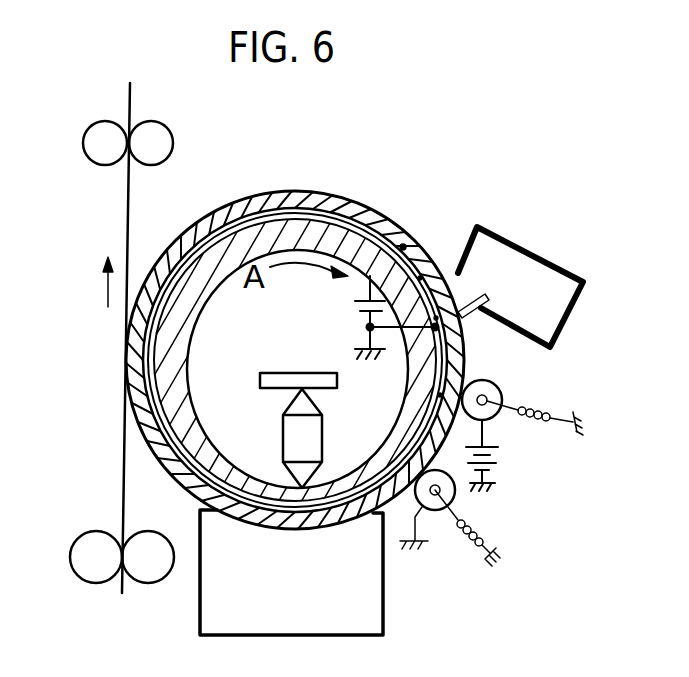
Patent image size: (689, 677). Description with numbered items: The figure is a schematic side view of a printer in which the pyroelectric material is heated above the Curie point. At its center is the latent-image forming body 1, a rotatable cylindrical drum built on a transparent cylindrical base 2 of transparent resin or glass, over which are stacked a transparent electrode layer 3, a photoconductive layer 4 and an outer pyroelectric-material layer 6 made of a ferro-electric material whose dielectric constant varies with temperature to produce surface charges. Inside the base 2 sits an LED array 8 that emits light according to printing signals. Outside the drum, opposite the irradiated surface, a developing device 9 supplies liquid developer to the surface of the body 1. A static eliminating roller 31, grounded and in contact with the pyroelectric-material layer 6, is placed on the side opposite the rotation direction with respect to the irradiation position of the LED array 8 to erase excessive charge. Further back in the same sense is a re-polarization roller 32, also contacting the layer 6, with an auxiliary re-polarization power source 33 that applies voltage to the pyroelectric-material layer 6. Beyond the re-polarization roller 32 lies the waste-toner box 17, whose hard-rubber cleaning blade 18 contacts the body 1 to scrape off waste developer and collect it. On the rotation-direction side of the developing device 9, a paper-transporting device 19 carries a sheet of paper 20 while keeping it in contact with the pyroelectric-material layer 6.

The latent-image forming body 1 is at (294, 189).
The transparent cylindrical base 2 is at (403, 421).
The transparent electrode layer 3 is at (448, 352).
The photoconductive layer 4 is at (343, 213).
The pyroelectric-material layer 6 is at (403, 247).
The LED array 8 is at (272, 374).
The developing device 9 is at (377, 615).
The waste-toner box 17 is at (507, 238).
The cleaning blade 18 is at (473, 297).
The paper-transporting device 19 is at (167, 122).
The sheet of paper 20 is at (125, 227).
The static eliminating roller 31 is at (457, 505).
The re-polarization roller 32 is at (505, 393).
The auxiliary re-polarization power source 33 is at (492, 466).